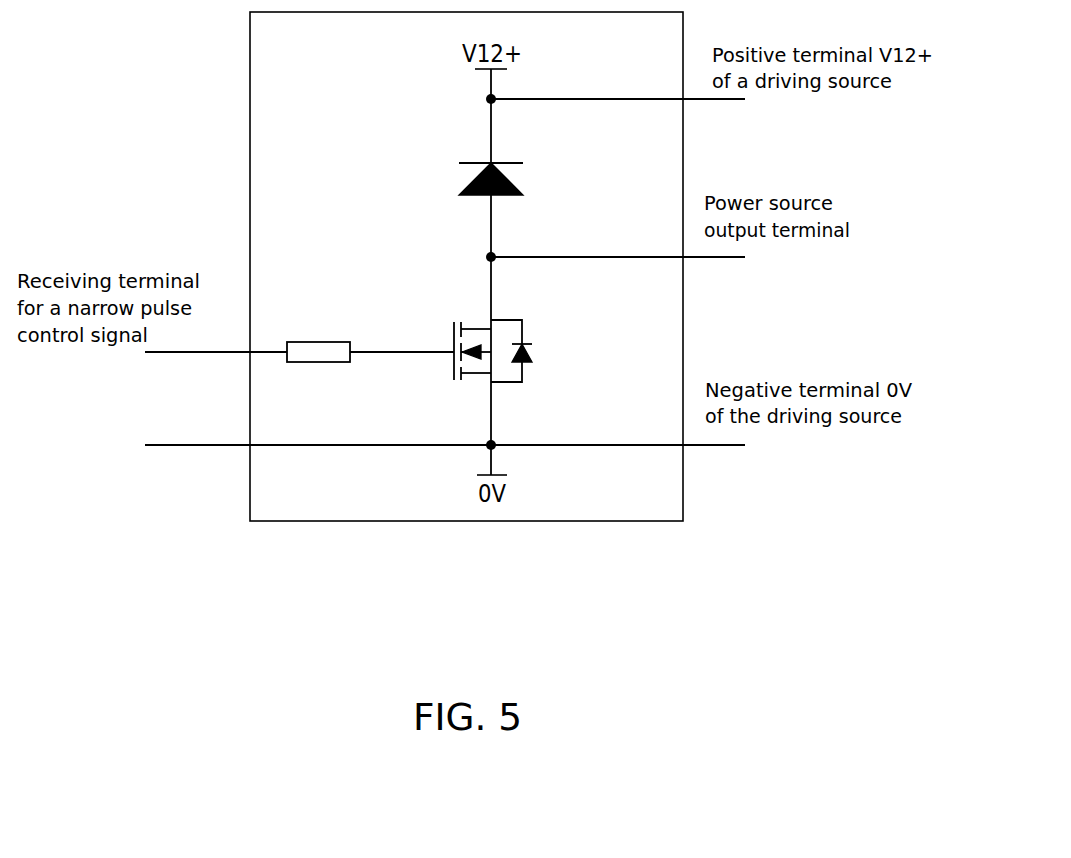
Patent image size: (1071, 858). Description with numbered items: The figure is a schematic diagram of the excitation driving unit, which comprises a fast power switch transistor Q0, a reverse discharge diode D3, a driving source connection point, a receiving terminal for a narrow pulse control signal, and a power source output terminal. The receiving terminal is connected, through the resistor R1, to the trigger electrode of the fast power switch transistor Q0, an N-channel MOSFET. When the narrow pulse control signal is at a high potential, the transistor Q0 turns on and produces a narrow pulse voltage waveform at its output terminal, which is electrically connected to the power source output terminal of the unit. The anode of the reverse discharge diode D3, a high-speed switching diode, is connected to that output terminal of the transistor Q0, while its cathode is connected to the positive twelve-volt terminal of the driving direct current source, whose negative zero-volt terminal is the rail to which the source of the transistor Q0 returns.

The reverse discharge diode D3 is at (509, 179).
The resistor R1 is at (318, 337).
The fast power switch transistor Q0 is at (567, 350).